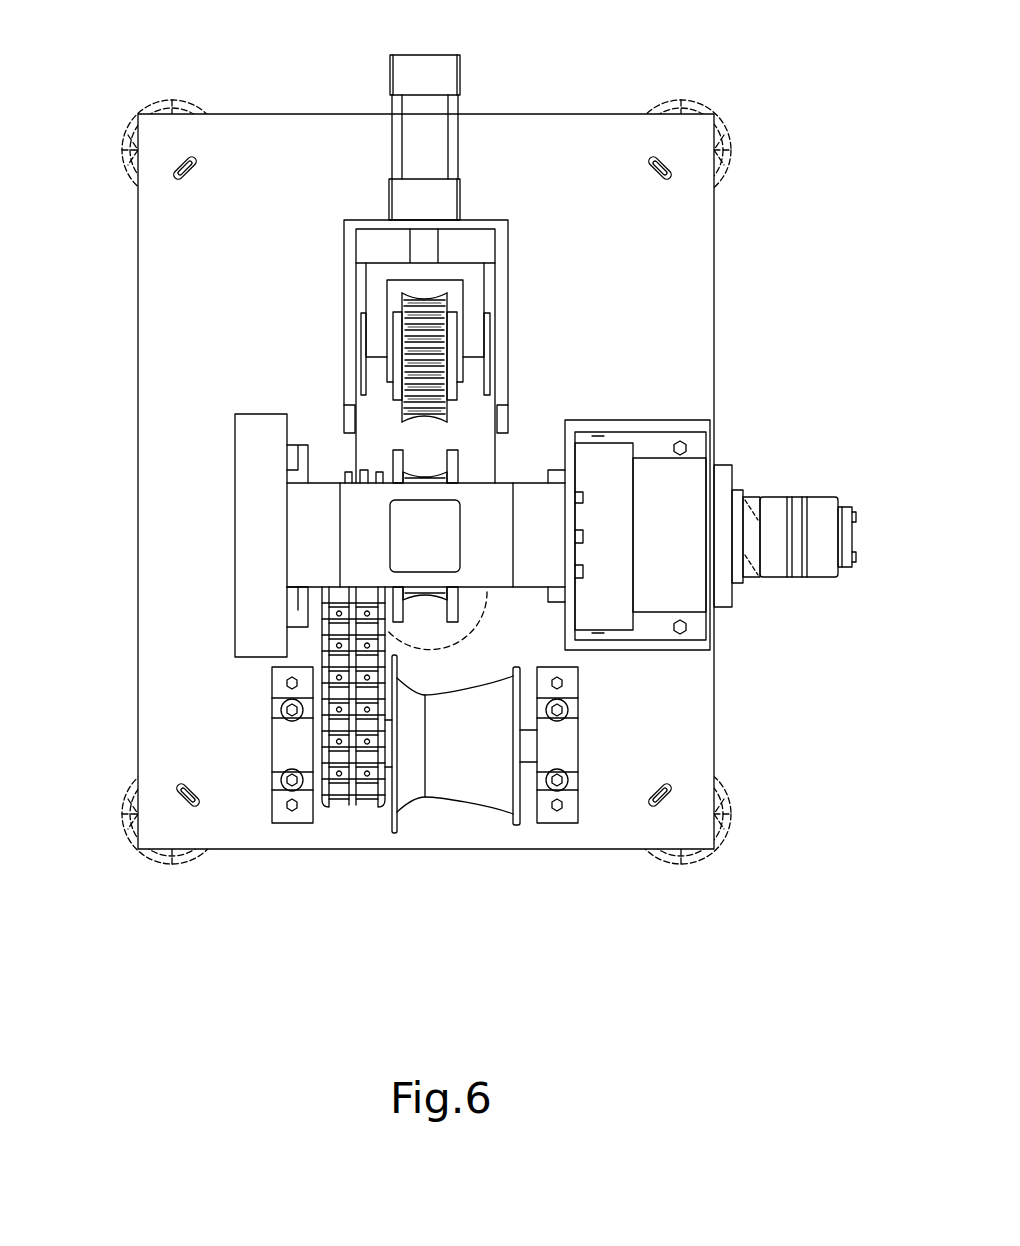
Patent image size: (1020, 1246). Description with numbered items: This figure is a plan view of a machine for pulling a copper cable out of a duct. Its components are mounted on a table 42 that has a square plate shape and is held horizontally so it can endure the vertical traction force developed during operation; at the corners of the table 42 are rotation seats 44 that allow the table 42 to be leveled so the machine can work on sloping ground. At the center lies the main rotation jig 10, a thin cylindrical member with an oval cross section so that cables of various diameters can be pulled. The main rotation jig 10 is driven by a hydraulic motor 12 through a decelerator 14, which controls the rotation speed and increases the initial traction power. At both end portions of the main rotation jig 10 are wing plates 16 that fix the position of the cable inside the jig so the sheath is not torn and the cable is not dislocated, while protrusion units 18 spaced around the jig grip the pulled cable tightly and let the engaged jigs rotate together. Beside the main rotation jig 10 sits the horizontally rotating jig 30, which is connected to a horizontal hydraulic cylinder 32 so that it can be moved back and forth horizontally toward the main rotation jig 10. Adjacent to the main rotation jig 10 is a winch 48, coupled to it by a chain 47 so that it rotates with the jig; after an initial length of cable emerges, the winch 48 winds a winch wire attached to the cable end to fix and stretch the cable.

The main rotation jig 10 is at (386, 621).
The hydraulic motor 12 is at (821, 517).
The decelerator 14 is at (682, 477).
The wing plate 16 is at (446, 293).
The protrusion unit 18 is at (424, 420).
The horizontally rotating jig 30 is at (402, 297).
The horizontal hydraulic cylinder 32 is at (443, 73).
The table 42 is at (695, 235).
The rotation seat 44 is at (732, 809).
The chain 47 is at (338, 787).
The winch 48 is at (460, 780).